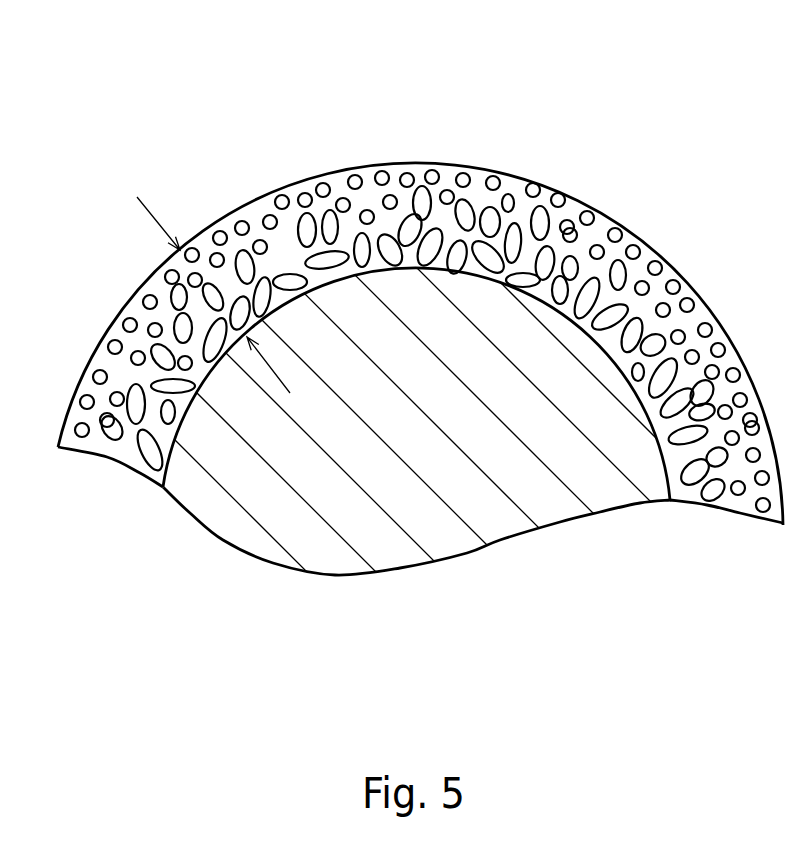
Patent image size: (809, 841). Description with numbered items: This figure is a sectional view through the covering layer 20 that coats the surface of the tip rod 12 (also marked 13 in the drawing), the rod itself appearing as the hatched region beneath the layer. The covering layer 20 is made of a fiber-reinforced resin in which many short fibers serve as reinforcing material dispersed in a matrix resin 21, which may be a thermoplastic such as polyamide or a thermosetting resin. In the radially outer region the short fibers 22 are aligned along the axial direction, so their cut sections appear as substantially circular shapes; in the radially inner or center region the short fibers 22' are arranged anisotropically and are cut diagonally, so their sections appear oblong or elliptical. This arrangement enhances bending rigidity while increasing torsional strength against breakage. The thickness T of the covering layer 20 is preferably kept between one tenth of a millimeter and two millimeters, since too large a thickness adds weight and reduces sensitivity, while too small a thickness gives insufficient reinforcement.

The tip rod 12 is at (404, 471).
The inner liner 13 is at (443, 498).
The covering layer 20 is at (420, 360).
The matrix resin 21 is at (450, 165).
The short fibers 22 is at (422, 296).
The short fibers 22' is at (414, 270).
The thickness T is at (213, 282).